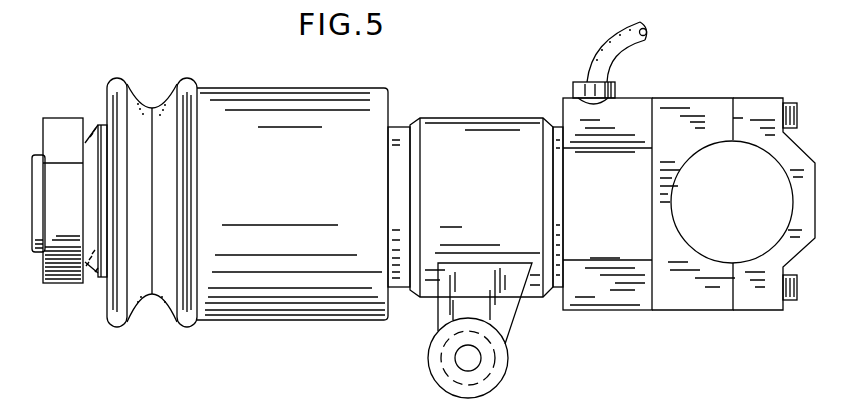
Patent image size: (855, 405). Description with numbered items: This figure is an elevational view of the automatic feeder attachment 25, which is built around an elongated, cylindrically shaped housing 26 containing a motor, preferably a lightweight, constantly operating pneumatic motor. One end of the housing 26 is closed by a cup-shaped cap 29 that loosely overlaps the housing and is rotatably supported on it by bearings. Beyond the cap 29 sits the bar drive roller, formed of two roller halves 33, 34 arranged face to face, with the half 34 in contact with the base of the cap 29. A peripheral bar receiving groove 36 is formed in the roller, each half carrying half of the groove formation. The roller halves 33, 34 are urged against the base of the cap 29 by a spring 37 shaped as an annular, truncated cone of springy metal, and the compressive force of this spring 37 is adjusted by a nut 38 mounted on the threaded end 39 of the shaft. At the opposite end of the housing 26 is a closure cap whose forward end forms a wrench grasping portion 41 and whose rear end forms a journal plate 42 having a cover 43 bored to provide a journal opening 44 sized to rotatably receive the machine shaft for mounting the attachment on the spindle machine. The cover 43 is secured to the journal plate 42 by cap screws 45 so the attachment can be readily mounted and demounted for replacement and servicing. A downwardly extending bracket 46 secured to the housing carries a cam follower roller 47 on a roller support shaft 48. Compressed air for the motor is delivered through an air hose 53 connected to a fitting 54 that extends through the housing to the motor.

The automatic feeder attachment 25 is at (443, 77).
The housing 26 is at (480, 117).
The cup-shaped cap 29 is at (280, 321).
The roller half 33 is at (112, 78).
The roller half 34 is at (186, 82).
The peripheral bar receiving groove 36 is at (133, 98).
The spring 37 is at (95, 278).
The nut 38 is at (62, 284).
The threaded end 39 is at (37, 253).
The wrench grasping portion 41 is at (633, 107).
The journal plate 42 is at (688, 98).
The cover 43 is at (755, 98).
The journal opening 44 is at (790, 190).
The cap screws 45 is at (797, 116).
The bracket 46 is at (503, 312).
The cam follower roller 47 is at (500, 377).
The roller support shaft 48 is at (468, 358).
The air hose 53 is at (605, 47).
The fitting 54 is at (590, 83).